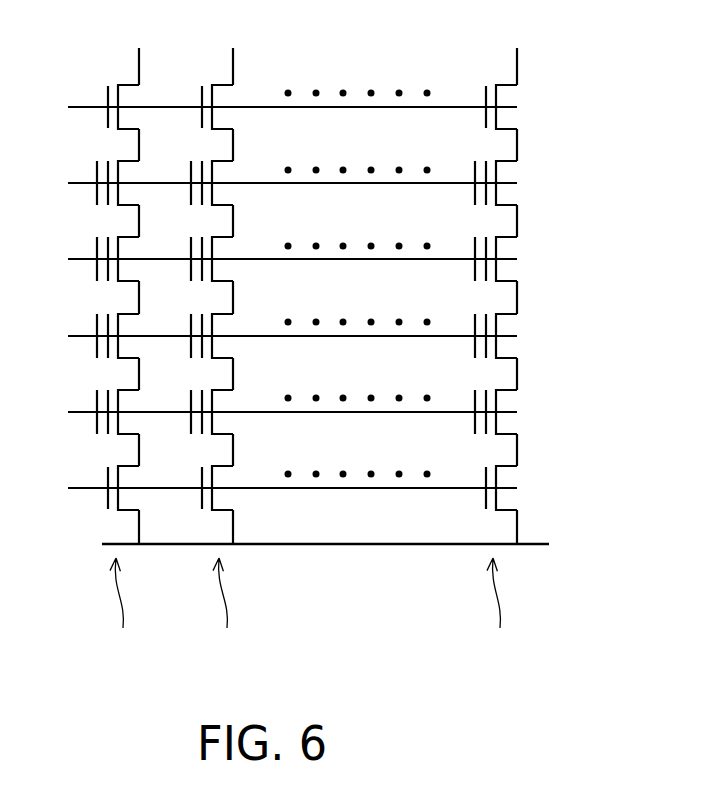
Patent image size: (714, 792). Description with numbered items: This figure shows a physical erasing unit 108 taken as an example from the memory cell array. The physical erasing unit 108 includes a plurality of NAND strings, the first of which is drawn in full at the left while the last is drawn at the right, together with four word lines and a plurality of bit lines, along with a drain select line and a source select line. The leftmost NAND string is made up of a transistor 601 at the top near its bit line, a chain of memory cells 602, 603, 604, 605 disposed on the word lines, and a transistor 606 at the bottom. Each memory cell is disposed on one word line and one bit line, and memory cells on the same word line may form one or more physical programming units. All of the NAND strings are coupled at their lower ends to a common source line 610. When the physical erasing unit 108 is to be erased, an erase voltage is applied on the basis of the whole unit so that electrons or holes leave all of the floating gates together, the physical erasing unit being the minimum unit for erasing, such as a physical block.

The transistor 601 is at (148, 111).
The memory cell 602 is at (148, 187).
The memory cell 603 is at (148, 263).
The memory cell 604 is at (148, 340).
The memory cell 605 is at (148, 416).
The transistor 606 is at (153, 498).
The source line 610 is at (539, 543).
The physical erasing unit 108 is at (342, 345).